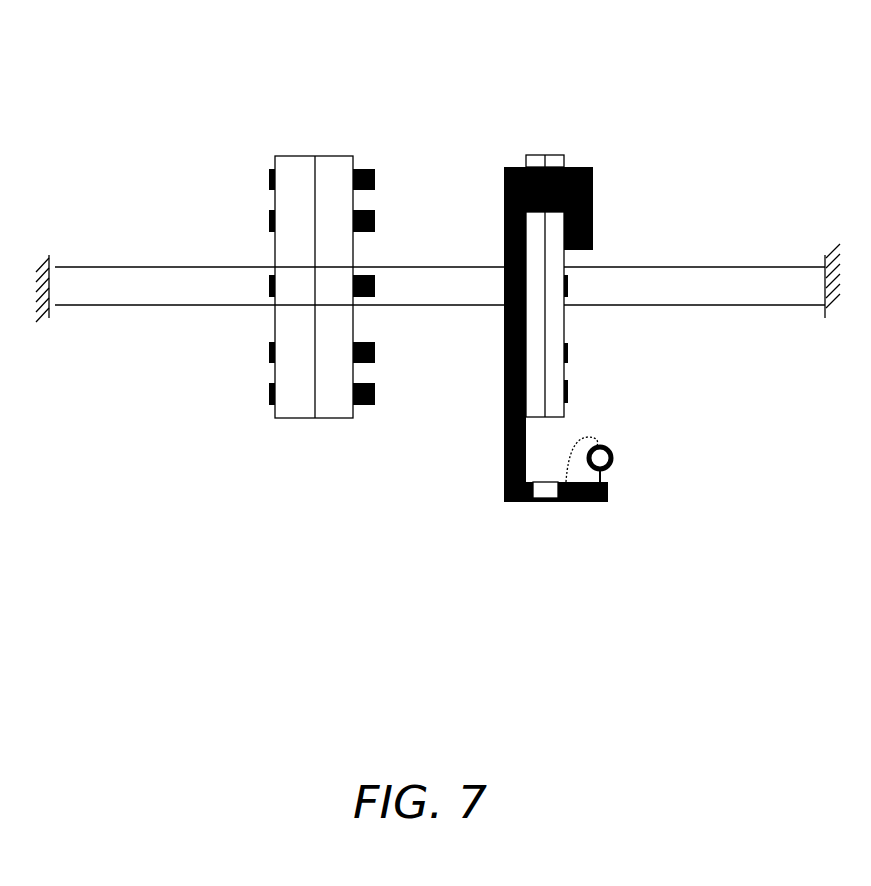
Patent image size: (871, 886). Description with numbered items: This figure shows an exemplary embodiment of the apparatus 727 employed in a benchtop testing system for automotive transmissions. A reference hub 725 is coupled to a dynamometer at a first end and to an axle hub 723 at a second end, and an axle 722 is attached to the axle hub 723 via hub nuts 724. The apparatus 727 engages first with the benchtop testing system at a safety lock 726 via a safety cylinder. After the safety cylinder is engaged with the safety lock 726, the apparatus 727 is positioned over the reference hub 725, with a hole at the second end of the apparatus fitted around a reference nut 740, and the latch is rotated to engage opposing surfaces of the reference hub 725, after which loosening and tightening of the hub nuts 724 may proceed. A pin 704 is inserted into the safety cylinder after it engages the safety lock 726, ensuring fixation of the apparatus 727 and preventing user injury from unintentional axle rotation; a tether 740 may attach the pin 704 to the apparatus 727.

The pin 704 is at (630, 502).
The axle 722 is at (125, 288).
The axle hub 723 is at (328, 177).
The hub nuts 724 is at (364, 403).
The reference hub 725 is at (537, 363).
The safety lock 726 is at (545, 492).
The apparatus 727 is at (592, 125).
The reference nut 740 is at (604, 264).